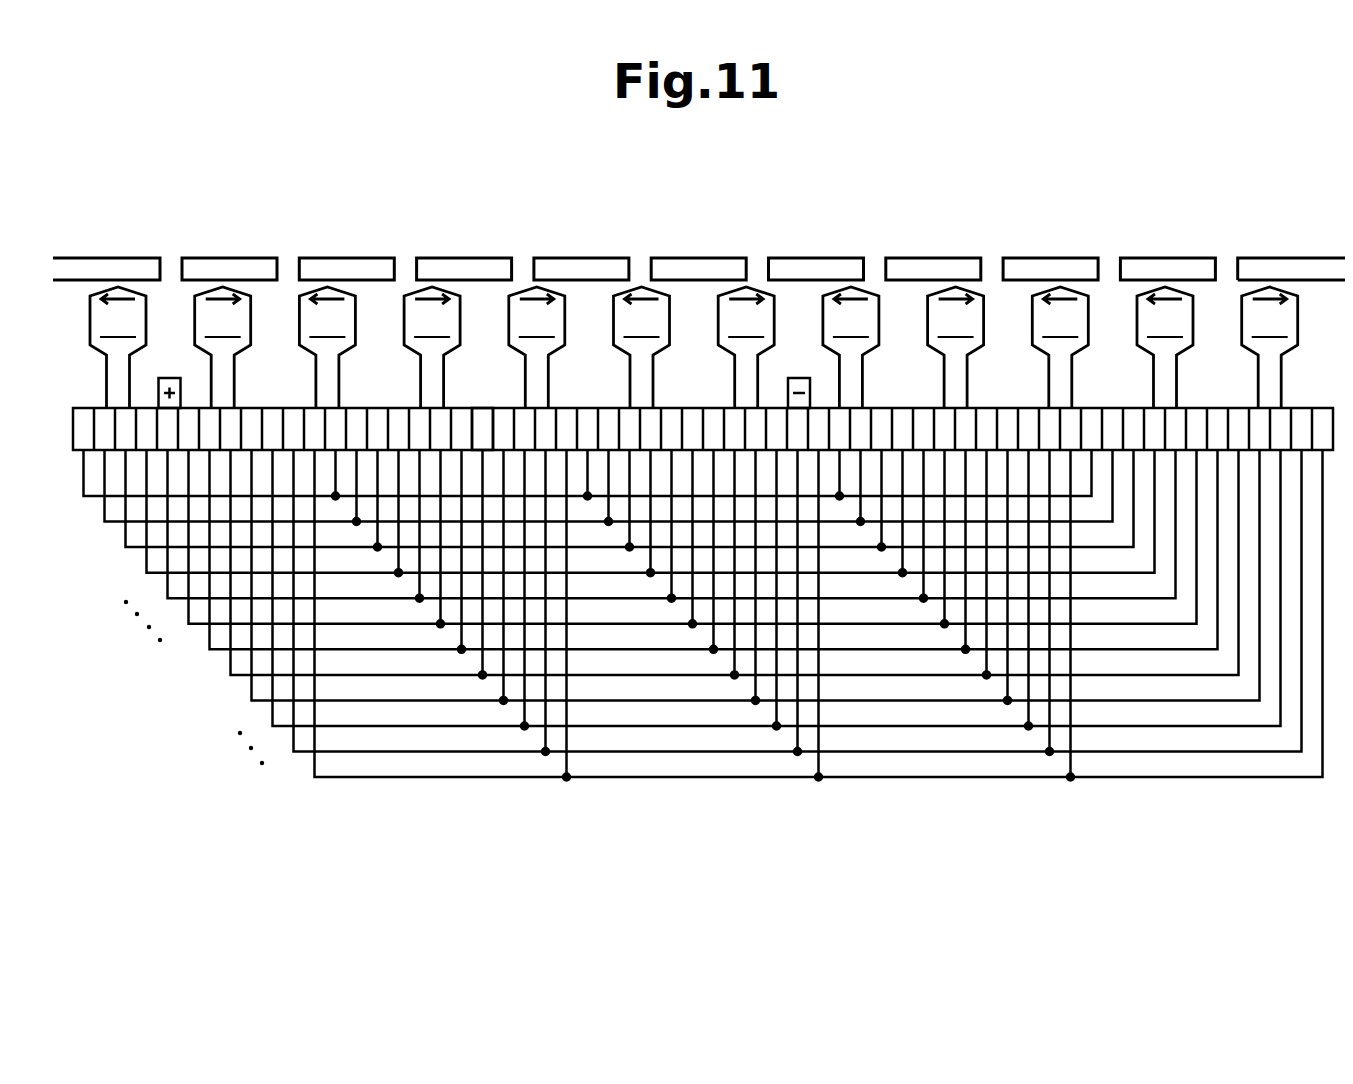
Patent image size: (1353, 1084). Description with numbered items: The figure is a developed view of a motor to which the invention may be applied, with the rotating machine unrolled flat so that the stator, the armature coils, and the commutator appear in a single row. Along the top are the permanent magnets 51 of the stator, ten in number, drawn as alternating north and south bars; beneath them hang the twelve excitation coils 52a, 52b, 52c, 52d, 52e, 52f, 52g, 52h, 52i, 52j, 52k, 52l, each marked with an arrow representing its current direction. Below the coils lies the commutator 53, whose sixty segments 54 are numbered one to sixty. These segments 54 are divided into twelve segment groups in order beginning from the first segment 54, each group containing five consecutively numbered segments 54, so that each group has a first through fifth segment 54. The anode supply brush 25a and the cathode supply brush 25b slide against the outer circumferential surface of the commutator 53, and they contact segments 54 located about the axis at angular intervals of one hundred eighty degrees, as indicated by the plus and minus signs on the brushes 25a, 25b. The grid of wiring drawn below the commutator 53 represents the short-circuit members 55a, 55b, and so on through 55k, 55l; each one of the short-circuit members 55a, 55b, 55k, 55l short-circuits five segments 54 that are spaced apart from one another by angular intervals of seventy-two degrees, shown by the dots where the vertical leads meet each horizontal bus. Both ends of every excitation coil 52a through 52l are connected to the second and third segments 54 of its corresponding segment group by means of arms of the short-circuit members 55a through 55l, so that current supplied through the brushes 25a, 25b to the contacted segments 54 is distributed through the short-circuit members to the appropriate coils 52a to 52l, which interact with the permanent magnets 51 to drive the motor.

The permanent magnet 51 is at (143, 258).
The excitation coil 52a is at (118, 347).
The excitation coil 52b is at (223, 347).
The excitation coil 52c is at (327, 347).
The excitation coil 52d is at (432, 347).
The excitation coil 52e is at (537, 347).
The excitation coil 52f is at (642, 347).
The excitation coil 52g is at (746, 347).
The excitation coil 52h is at (851, 347).
The excitation coil 52i is at (956, 347).
The excitation coil 52j is at (1060, 347).
The excitation coil 52k is at (1165, 347).
The excitation coil 52l is at (1270, 347).
The commutator 53 is at (1320, 405).
The segment 54 is at (486, 407).
The anode supply brush 25a is at (170, 377).
The cathode supply brush 25b is at (800, 377).
The short-circuit member 55a is at (97, 503).
The short-circuit member 55b is at (121, 528).
The short-circuit member 55k is at (307, 755).
The short-circuit member 55l is at (338, 782).